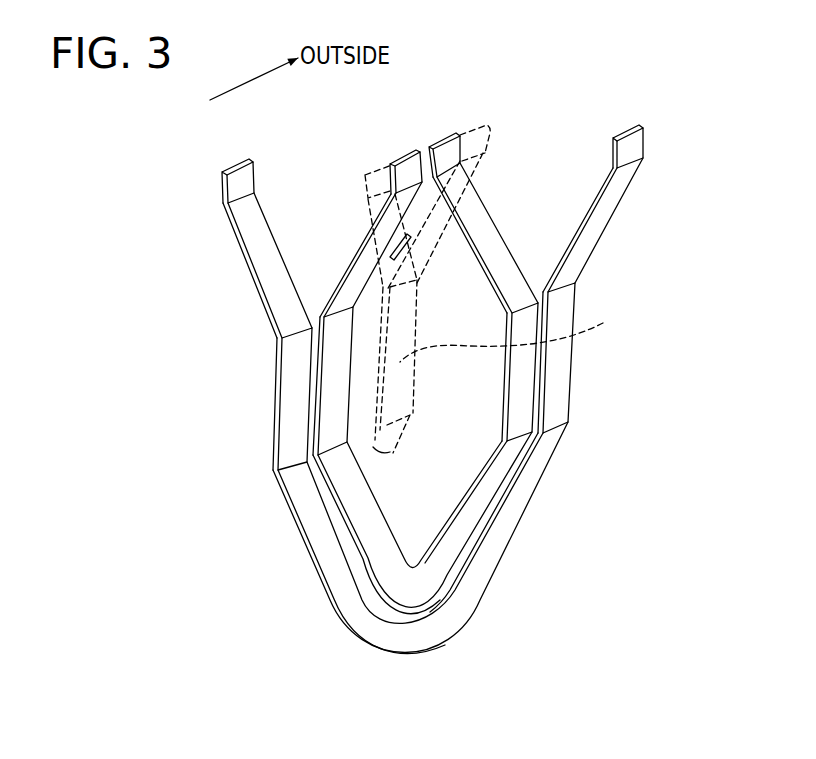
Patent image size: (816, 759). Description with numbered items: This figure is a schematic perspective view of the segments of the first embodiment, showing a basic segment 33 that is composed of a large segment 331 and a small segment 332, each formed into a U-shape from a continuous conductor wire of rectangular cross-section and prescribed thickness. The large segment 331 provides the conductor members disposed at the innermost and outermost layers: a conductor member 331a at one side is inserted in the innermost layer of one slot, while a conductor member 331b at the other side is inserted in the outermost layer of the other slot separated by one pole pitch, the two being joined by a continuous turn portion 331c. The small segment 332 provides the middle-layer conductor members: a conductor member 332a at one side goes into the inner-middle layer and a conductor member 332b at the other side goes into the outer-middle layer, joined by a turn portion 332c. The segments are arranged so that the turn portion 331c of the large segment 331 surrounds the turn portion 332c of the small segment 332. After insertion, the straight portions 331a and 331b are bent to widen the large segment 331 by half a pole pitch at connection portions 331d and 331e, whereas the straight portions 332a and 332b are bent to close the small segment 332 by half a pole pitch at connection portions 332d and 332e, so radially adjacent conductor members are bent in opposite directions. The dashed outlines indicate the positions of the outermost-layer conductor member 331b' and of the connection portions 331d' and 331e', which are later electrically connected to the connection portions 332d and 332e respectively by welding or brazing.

The basic segment 33 is at (327, 610).
The large segment 331 is at (602, 242).
The conductor member 331a is at (293, 383).
The conductor member 331b is at (602, 358).
The conductor member 331b' is at (536, 335).
The turn portion 331c is at (392, 640).
The connection portion 331d is at (191, 181).
The connection portion 331d' is at (364, 200).
The connection portion 331e is at (680, 146).
The connection portion 331e' is at (453, 260).
The small segment 332 is at (520, 257).
The conductor member 332a is at (332, 407).
The conductor member 332b is at (520, 407).
The turn portion 332c is at (413, 590).
The connection portion 332d is at (408, 168).
The connection portion 332e is at (446, 153).